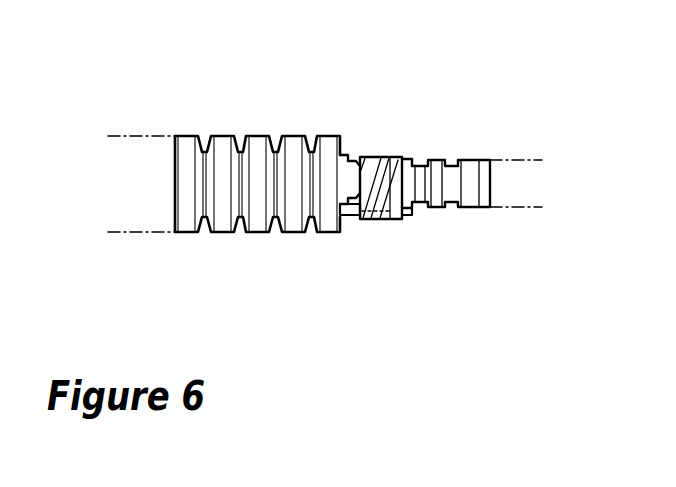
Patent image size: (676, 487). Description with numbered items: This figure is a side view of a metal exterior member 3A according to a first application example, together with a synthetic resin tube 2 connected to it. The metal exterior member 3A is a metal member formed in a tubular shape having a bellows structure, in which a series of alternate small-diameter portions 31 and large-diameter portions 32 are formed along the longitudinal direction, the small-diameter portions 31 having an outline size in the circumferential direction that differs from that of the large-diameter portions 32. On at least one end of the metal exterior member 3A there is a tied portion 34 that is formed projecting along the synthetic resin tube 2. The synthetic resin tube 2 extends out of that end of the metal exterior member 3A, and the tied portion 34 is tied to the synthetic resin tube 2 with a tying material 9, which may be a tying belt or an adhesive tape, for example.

The metal exterior member 3A is at (224, 177).
The small-diameter portions 31 is at (274, 139).
The large-diameter portions 32 is at (292, 233).
The tying material 9 is at (377, 157).
The synthetic resin tube 2 is at (443, 160).
The tied portion 34 is at (412, 213).